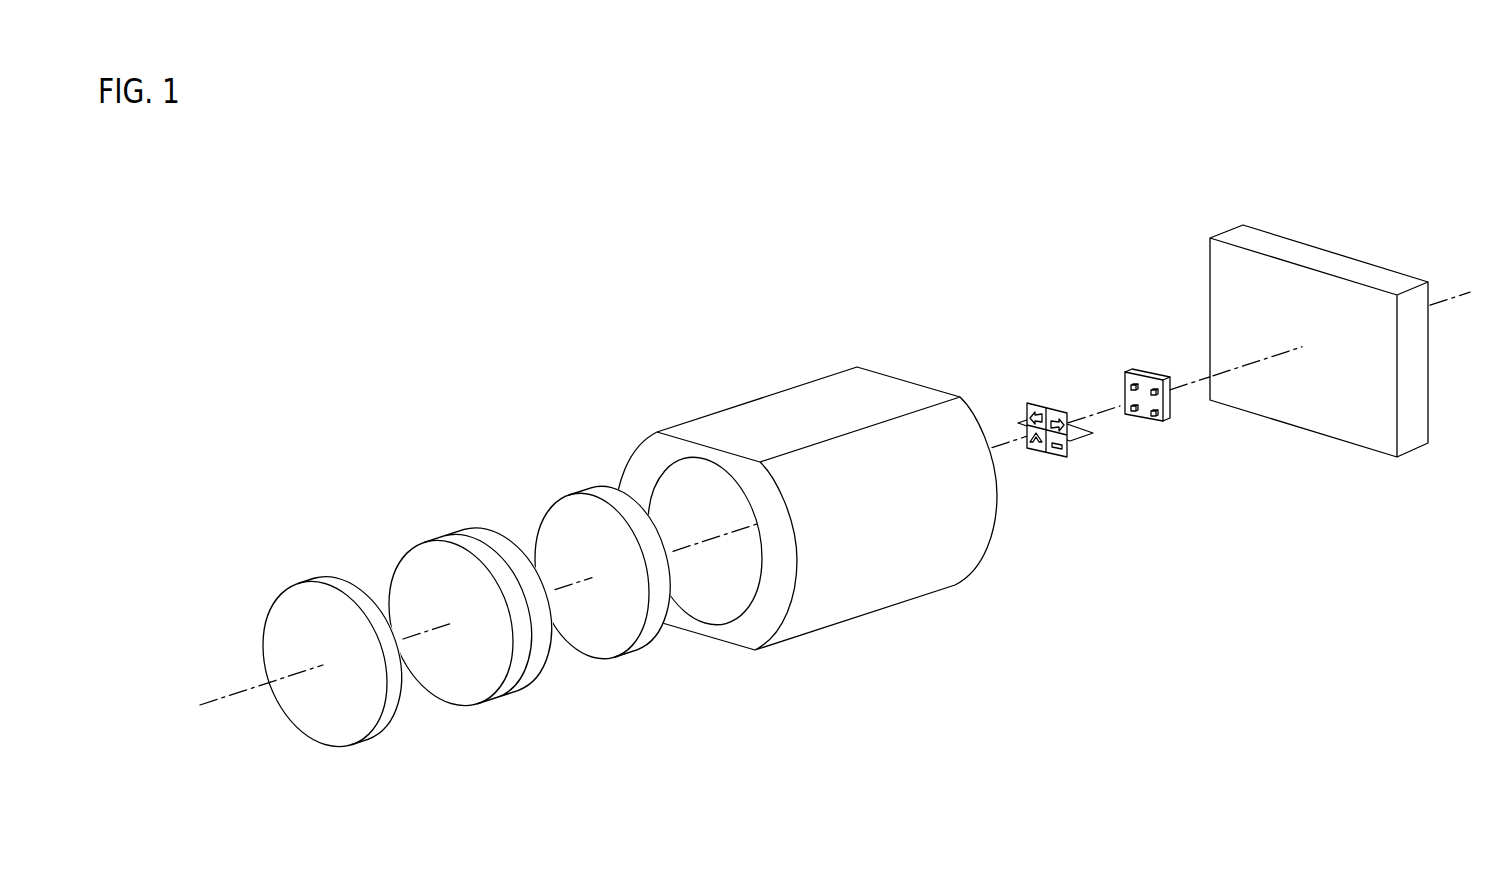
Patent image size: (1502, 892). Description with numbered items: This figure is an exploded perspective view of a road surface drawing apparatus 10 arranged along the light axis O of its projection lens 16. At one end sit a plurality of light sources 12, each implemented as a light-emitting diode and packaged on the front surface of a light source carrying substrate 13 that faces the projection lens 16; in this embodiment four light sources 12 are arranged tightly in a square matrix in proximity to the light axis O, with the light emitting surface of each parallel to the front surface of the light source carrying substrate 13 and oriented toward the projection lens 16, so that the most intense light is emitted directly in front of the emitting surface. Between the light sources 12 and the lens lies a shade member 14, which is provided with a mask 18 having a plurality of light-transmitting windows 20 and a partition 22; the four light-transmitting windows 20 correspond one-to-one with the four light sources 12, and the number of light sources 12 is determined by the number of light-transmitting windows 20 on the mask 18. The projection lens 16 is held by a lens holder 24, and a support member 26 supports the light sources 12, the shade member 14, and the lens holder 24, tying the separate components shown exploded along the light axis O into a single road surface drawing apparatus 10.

The road surface drawing apparatus 10 is at (882, 796).
The light axis O is at (220, 694).
The light source 12 is at (1137, 408).
The light source carrying substrate 13 is at (1156, 425).
The shade member 14 is at (1052, 530).
The projection lens 16 is at (245, 580).
The mask 18 is at (1052, 455).
The light-transmitting window 20 is at (1027, 440).
The partition 22 is at (1078, 433).
The lens holder 24 is at (742, 423).
The support member 26 is at (1362, 428).